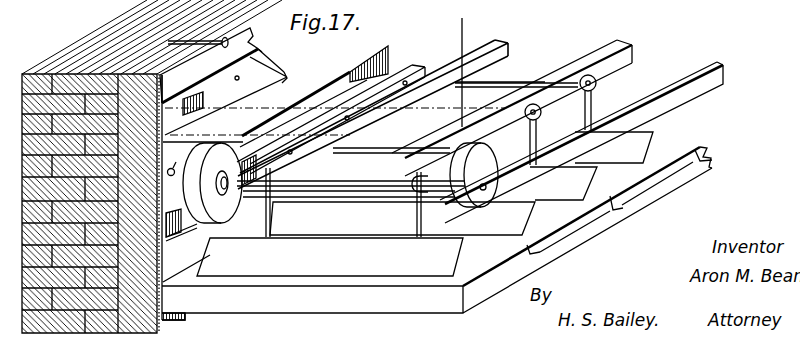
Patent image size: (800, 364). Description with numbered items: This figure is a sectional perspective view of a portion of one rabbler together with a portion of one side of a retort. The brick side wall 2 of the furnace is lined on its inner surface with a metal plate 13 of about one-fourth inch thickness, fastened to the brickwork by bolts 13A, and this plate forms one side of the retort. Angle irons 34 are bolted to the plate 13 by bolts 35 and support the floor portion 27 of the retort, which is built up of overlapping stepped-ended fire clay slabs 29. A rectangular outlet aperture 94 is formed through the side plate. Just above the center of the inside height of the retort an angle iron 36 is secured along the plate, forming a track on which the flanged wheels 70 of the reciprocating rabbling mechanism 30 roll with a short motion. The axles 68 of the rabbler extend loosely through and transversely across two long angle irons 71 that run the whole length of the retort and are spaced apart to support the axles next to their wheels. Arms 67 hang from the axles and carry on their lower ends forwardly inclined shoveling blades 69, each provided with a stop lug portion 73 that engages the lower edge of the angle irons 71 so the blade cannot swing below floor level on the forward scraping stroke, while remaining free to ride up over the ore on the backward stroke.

The side wall 2 is at (100, 34).
The metal plate 13 is at (178, 70).
The bolt 13A is at (204, 29).
The floor portion 27 is at (259, 300).
The fire clay slab 29 is at (582, 228).
The rabbling mechanism 30 is at (500, 72).
The angle iron 34 is at (260, 63).
The bolt 35 is at (235, 77).
The angle iron track 36 is at (171, 241).
The arm 67 is at (592, 110).
The axle 68 is at (513, 87).
The shoveling blade 69 is at (667, 132).
The flanged wheel 70 is at (226, 203).
The long angle iron 71 is at (497, 42).
The stop lug portion 73 is at (597, 89).
The outlet aperture 94 is at (330, 85).